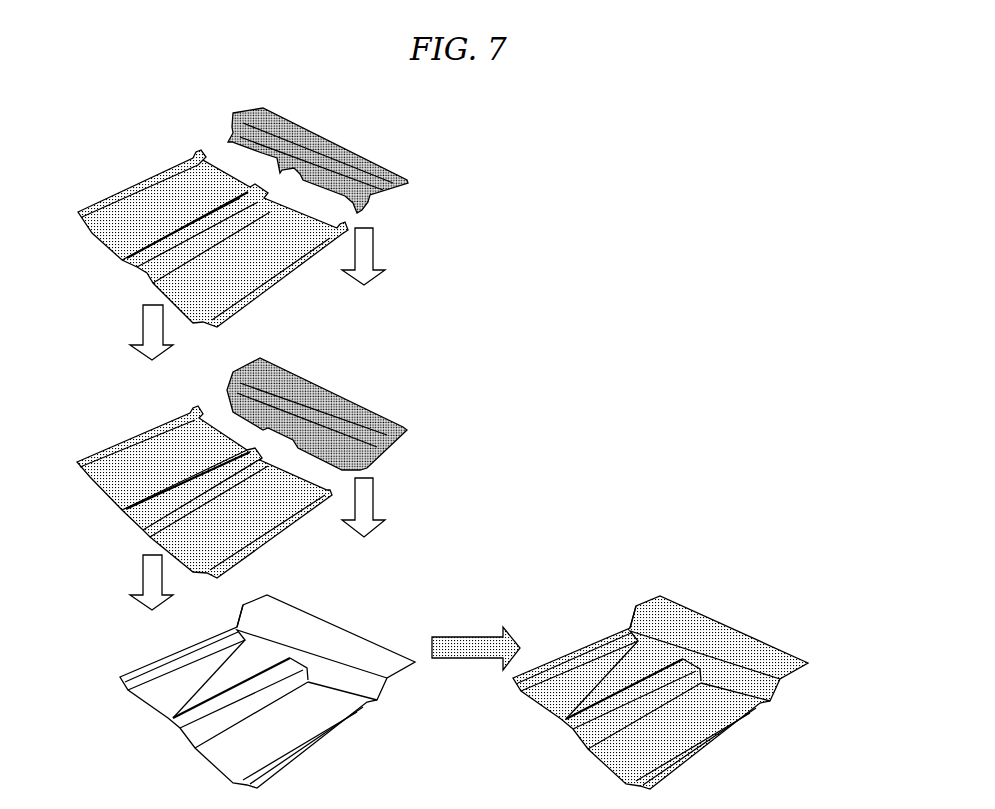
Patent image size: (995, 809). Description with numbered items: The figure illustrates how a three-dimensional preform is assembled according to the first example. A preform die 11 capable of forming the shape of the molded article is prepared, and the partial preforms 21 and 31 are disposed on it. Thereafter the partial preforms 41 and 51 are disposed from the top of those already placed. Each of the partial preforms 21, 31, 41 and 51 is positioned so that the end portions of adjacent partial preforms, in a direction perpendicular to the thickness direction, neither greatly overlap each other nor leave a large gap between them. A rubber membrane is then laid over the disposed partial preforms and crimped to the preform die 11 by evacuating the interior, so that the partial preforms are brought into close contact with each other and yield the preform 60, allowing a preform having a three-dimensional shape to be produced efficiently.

The partial preform 51 is at (304, 123).
The partial preform 41 is at (115, 260).
The partial preform 31 is at (300, 375).
The partial preform 21 is at (115, 512).
The preform die 11 is at (350, 735).
The preform 60 is at (740, 631).